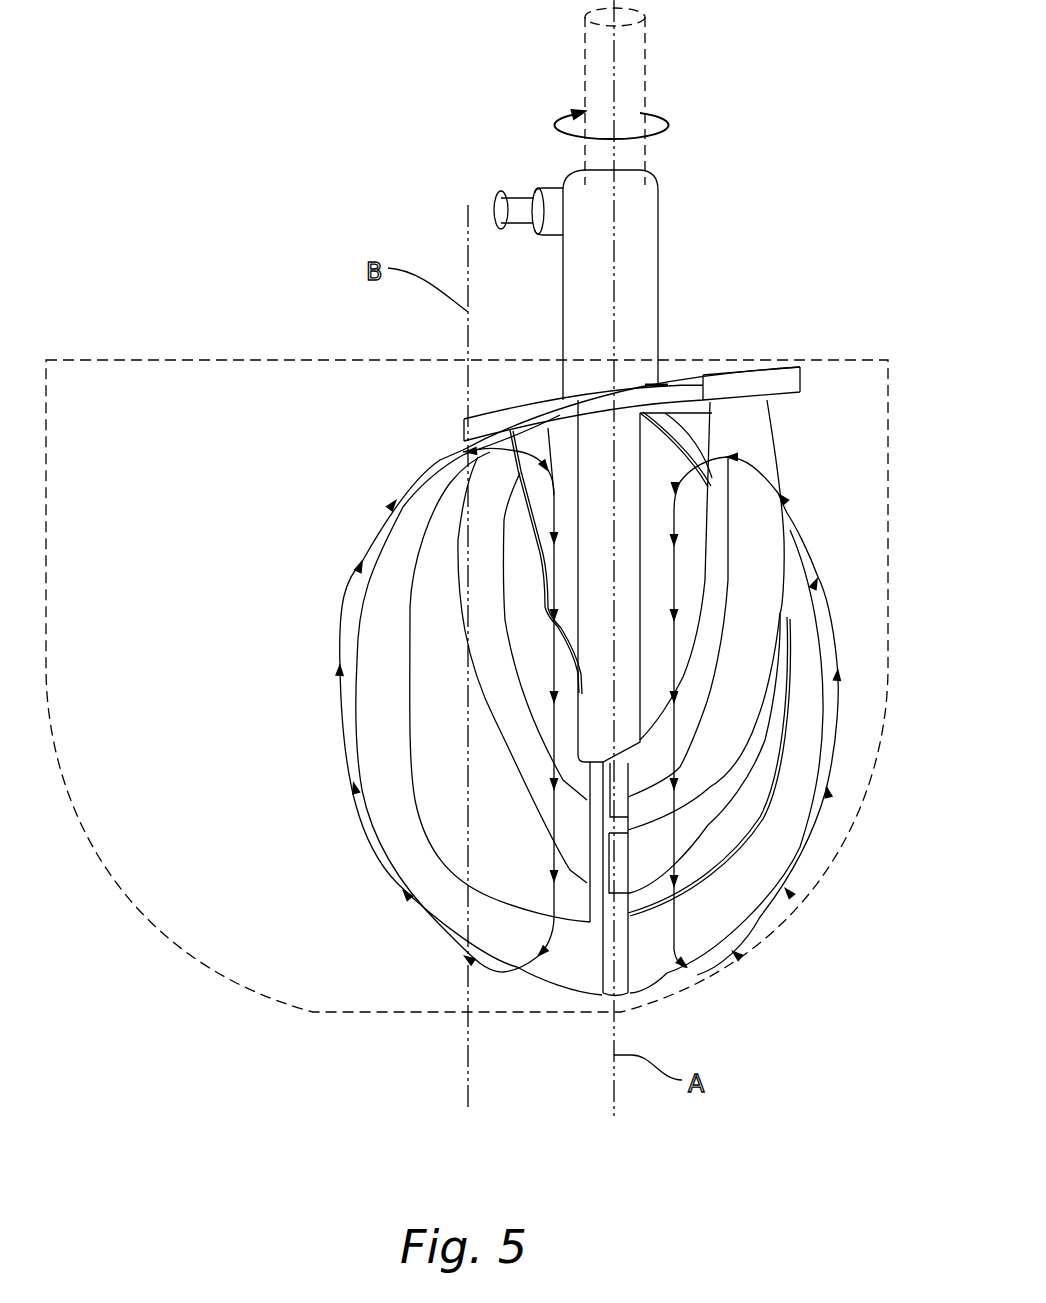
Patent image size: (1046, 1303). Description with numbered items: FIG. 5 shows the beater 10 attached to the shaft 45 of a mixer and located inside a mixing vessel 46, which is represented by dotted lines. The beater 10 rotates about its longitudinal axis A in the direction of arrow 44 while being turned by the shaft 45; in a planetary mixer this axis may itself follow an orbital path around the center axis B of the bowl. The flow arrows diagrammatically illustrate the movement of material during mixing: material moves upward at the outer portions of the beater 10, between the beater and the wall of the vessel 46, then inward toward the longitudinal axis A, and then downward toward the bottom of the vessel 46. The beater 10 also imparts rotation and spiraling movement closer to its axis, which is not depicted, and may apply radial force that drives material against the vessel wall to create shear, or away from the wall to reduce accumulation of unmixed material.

The beater 10 is at (643, 292).
The arrow 44 is at (671, 127).
The shaft 45 is at (637, 62).
The mixing vessel 46 is at (137, 915).